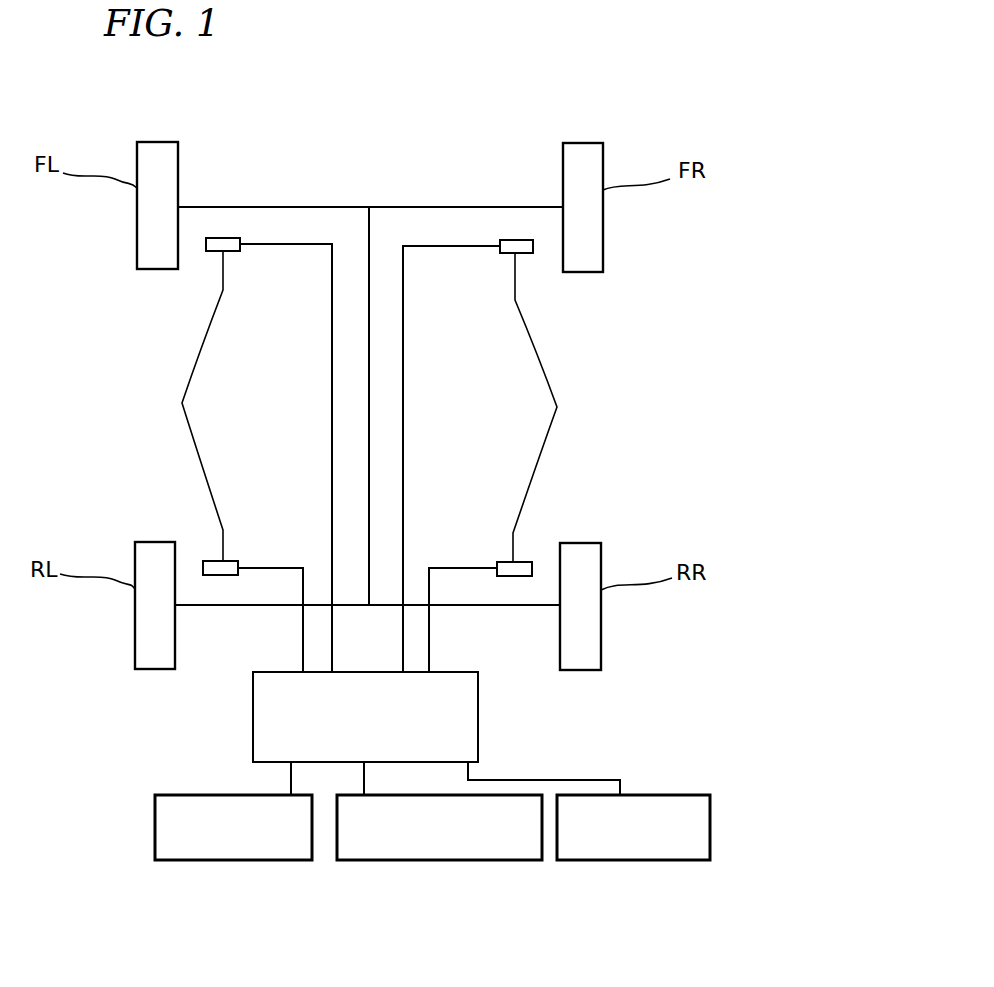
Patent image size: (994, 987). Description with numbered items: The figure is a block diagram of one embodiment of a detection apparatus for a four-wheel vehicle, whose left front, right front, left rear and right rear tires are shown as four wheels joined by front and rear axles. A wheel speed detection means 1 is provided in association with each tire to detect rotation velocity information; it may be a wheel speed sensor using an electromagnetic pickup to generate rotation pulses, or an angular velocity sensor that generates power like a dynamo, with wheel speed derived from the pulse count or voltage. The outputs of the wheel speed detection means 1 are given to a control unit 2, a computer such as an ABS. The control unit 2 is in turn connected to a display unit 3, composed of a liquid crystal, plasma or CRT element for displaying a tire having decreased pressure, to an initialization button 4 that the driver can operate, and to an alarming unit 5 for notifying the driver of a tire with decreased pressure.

The wheel speed detection means 1 is at (523, 455).
The control unit 2 is at (478, 722).
The display unit 3 is at (290, 862).
The initialization button 4 is at (361, 862).
The alarming unit 5 is at (633, 862).